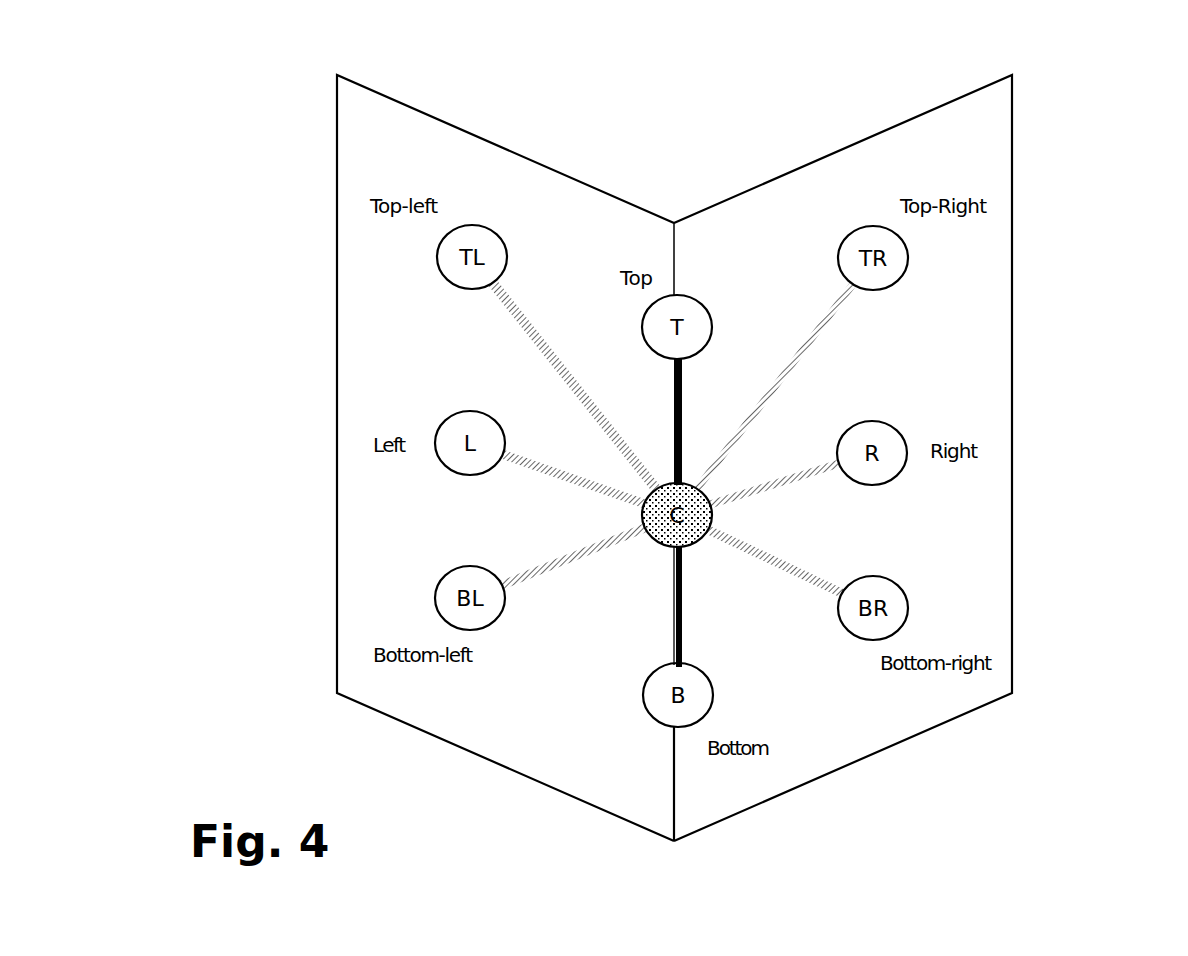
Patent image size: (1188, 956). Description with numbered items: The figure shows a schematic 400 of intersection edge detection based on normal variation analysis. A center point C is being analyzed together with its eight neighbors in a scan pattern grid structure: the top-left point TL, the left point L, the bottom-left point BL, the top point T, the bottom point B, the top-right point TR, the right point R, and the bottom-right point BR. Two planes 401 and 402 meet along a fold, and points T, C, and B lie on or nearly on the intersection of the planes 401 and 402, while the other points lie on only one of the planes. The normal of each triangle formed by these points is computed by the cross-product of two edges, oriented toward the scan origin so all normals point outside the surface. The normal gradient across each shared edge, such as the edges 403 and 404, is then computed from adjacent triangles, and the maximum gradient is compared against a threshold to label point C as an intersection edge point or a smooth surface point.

The schematic 400 is at (1112, 152).
The first plane 401 is at (375, 337).
The second plane 402 is at (954, 355).
The shared edge 403 is at (545, 357).
The shared edge 404 is at (683, 425).